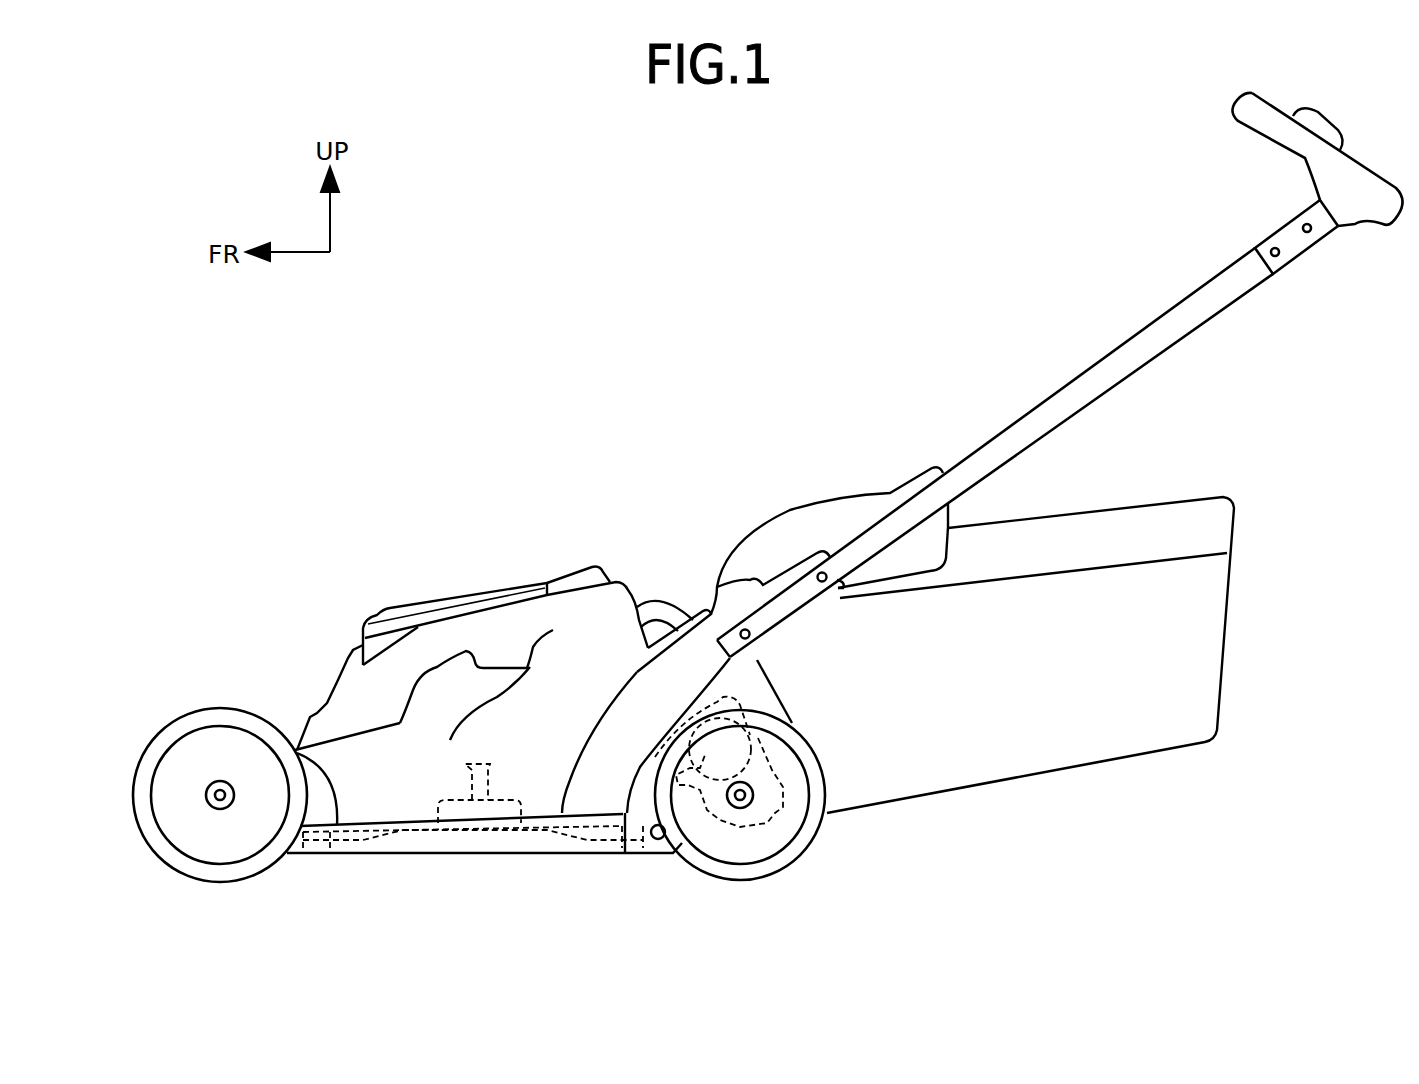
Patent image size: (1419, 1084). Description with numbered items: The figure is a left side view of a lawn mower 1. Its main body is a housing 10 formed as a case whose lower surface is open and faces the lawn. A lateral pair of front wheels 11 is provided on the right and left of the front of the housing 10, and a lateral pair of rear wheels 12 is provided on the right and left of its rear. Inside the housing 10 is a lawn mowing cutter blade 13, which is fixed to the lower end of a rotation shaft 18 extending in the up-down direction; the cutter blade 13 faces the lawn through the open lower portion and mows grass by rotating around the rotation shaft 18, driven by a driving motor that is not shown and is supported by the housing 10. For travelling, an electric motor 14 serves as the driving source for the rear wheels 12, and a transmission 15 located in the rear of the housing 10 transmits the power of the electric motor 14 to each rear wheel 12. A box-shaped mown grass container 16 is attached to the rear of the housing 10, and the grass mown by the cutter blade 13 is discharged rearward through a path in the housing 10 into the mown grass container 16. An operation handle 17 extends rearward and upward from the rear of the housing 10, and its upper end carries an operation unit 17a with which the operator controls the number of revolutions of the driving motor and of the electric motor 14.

The lawn mower 1 is at (365, 426).
The housing 10 is at (350, 737).
The front wheels 11 is at (182, 868).
The rear wheels 12 is at (727, 882).
The cutter blade 13 is at (588, 857).
The electric motor 14 is at (668, 857).
The transmission 15 is at (793, 853).
The mown grass container 16 is at (1220, 677).
The operation handle 17 is at (1060, 362).
The operation unit 17a is at (1327, 122).
The rotation shaft 18 is at (467, 773).